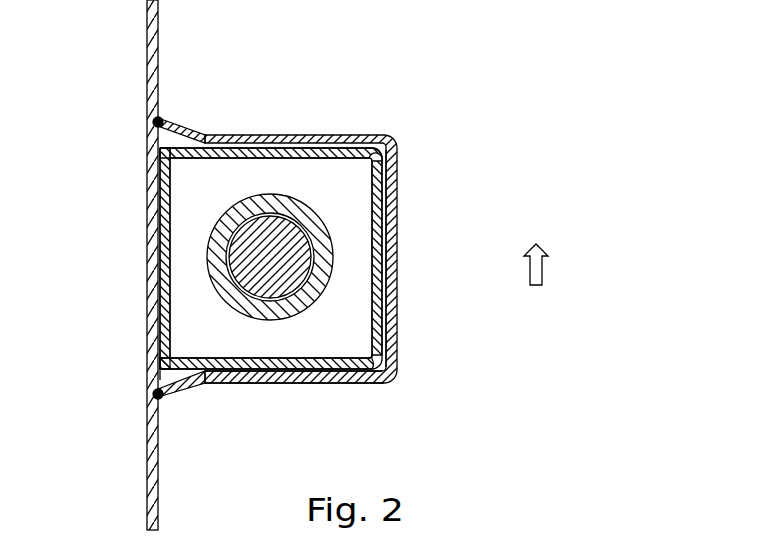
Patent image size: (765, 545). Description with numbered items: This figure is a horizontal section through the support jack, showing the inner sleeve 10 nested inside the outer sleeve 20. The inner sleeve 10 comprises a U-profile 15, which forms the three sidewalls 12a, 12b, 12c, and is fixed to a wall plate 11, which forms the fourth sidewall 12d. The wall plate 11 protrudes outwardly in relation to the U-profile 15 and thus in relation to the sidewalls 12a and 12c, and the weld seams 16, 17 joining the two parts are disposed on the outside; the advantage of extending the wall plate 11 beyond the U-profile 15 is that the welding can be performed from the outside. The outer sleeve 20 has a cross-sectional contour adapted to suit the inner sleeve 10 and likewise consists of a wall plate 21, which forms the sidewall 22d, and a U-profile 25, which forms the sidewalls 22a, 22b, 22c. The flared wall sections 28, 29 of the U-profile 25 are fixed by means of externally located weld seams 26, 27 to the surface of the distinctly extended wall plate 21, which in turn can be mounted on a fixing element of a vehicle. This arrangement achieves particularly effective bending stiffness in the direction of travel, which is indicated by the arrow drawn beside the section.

The inner sleeve 10 is at (257, 255).
The wall plate 11 is at (257, 258).
The sidewall 12a is at (271, 122).
The sidewall 12b is at (419, 258).
The sidewall 12c is at (271, 394).
The sidewall 12d is at (109, 258).
The U-profile 15 is at (375, 347).
The weld seam 16 is at (167, 147).
The weld seam 17 is at (160, 373).
The outer sleeve 20 is at (392, 175).
The wall plate 21 is at (150, 490).
The sidewall 22a is at (293, 147).
The sidewall 22b is at (392, 308).
The sidewall 22c is at (343, 372).
The sidewall 22d is at (162, 270).
The U-profile 25 is at (388, 383).
The weld seam 26 is at (159, 121).
The weld seam 27 is at (159, 398).
The flared wall section 28 is at (184, 127).
The flared wall section 29 is at (190, 385).